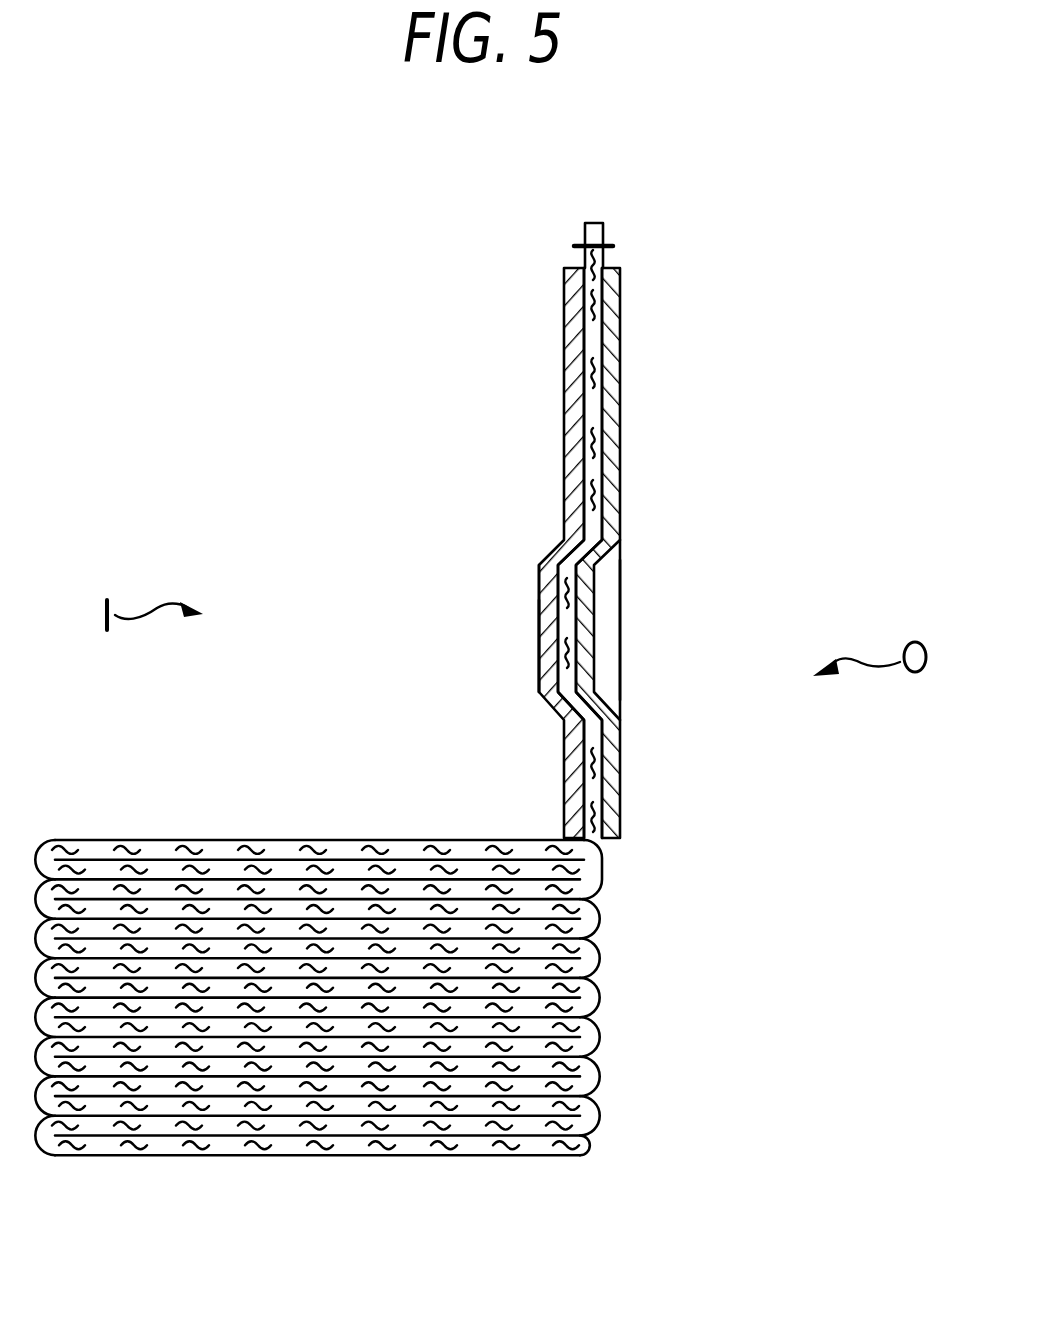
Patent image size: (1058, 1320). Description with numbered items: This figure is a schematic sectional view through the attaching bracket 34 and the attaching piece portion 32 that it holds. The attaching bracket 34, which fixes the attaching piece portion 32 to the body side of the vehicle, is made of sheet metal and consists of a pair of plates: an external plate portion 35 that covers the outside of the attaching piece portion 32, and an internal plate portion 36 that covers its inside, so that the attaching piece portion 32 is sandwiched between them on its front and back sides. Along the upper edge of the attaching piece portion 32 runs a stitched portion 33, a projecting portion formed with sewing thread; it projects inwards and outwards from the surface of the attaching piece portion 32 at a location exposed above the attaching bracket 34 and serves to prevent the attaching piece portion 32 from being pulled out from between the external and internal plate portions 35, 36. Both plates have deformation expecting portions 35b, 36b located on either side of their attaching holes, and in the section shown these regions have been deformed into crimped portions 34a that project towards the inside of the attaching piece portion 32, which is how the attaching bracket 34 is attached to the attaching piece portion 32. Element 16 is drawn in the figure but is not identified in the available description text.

The heat exchanger tube (serpentine refrigerant pipe) 16 is at (640, 988).
The attaching piece portion 32 is at (595, 354).
The stitched portion 33 is at (607, 245).
The attaching bracket 34 is at (673, 553).
The external plate portion 35 is at (741, 370).
The internal plate portion 36 is at (580, 470).
The crimped portion 34a is at (510, 680).
The deformation expecting portion 35b is at (600, 630).
The deformation expecting portion 36b is at (542, 590).